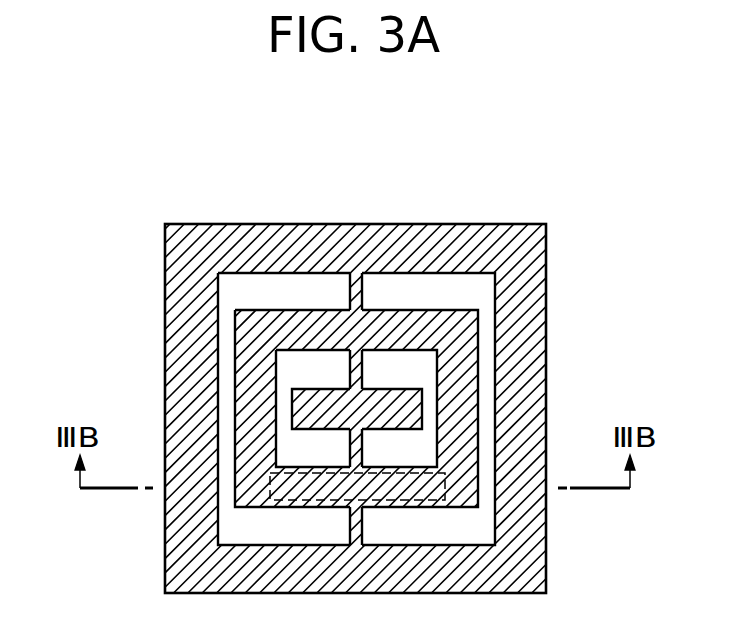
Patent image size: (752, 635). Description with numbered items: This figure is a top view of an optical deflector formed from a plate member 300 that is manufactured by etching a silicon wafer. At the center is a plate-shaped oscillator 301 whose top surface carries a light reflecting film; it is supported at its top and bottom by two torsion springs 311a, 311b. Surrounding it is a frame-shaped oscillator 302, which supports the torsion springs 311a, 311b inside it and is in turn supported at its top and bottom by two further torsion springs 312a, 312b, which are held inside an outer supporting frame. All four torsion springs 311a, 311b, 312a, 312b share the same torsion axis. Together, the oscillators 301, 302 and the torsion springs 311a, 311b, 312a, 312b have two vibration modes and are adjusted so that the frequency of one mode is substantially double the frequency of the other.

The plate member 300 is at (357, 360).
The oscillator 301 is at (297, 410).
The oscillator 302 is at (245, 329).
The torsion spring 311a is at (358, 373).
The torsion spring 311b is at (358, 443).
The torsion spring 312a is at (358, 292).
The torsion spring 312b is at (357, 525).